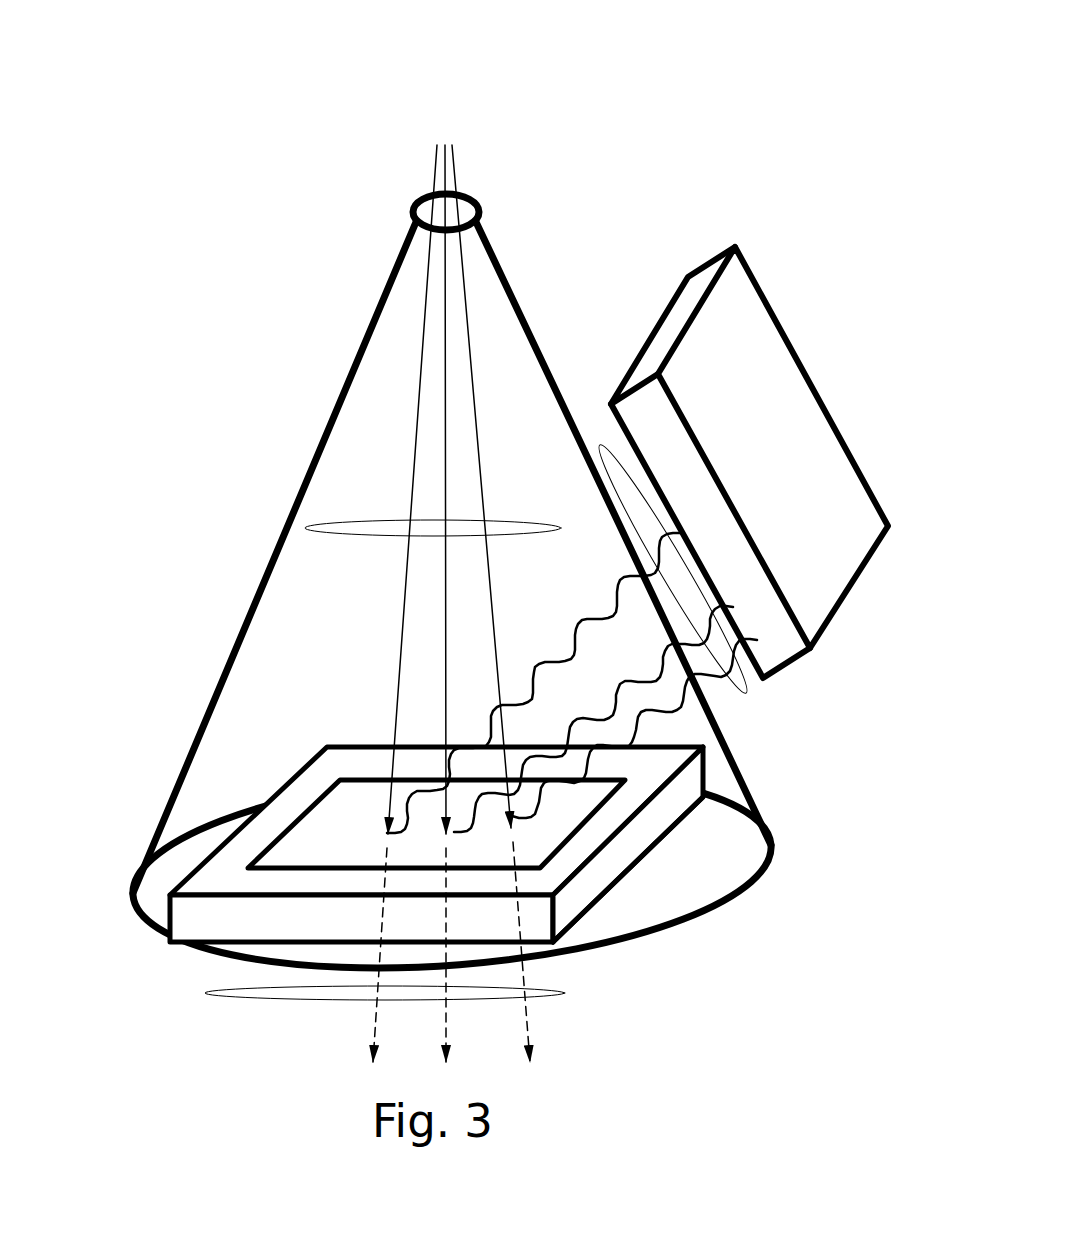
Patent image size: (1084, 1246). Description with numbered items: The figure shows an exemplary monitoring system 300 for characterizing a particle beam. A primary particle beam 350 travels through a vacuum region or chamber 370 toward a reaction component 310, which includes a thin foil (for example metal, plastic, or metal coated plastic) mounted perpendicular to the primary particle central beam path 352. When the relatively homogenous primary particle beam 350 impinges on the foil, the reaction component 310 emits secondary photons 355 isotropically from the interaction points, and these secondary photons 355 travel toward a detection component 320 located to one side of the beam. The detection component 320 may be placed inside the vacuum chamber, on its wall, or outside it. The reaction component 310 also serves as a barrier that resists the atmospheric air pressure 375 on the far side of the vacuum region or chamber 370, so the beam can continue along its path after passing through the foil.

The monitoring system 300 is at (286, 29).
The reaction component 310 is at (673, 833).
The detection component 320 is at (790, 521).
The primary particle beam 350 is at (305, 528).
The primary particle central beam path 352 is at (447, 1023).
The secondary photons 355 is at (735, 688).
The vacuum region or chamber 370 is at (376, 386).
The atmospheric air pressure 375 is at (590, 915).